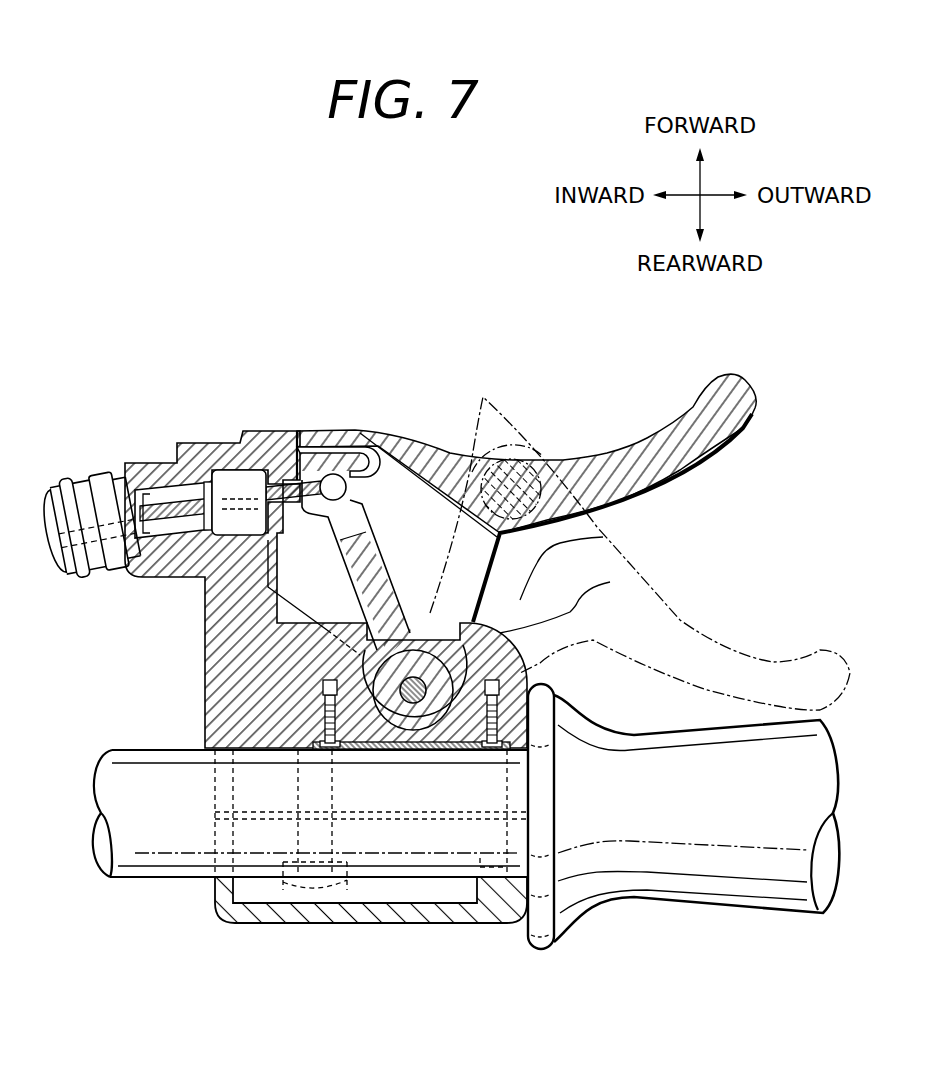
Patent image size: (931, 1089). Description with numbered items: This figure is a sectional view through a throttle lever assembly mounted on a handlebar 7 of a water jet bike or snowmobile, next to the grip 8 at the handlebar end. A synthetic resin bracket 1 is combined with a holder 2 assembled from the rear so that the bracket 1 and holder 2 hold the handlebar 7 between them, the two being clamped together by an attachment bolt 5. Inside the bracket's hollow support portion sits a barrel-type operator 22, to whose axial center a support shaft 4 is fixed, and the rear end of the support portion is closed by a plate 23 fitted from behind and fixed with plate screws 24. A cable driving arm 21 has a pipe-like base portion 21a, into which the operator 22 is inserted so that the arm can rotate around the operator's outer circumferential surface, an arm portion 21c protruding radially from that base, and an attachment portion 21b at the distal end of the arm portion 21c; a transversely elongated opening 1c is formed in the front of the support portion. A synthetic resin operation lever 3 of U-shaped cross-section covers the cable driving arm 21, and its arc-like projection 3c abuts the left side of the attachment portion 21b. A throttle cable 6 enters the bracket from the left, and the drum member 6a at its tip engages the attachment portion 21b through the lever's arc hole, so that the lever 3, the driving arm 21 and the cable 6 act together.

The bracket 1 is at (210, 443).
The opening 1c is at (603, 537).
The holder 2 is at (373, 913).
The operation lever 3 is at (675, 437).
The arc-like projection 3c is at (275, 430).
The support shaft 4 is at (414, 730).
The attachment bolt 5 is at (290, 888).
The throttle cable 6 is at (165, 510).
The drum member 6a is at (334, 474).
The handlebar 7 is at (257, 843).
The grip 8 is at (703, 890).
The cable driving arm 21 is at (373, 580).
The pipe-like base portion 21a is at (440, 738).
The attachment portion 21b is at (375, 505).
The arm portion 21c is at (390, 585).
The operator 22 is at (610, 582).
The plate 23 is at (393, 750).
The plate screws 24 is at (333, 750).